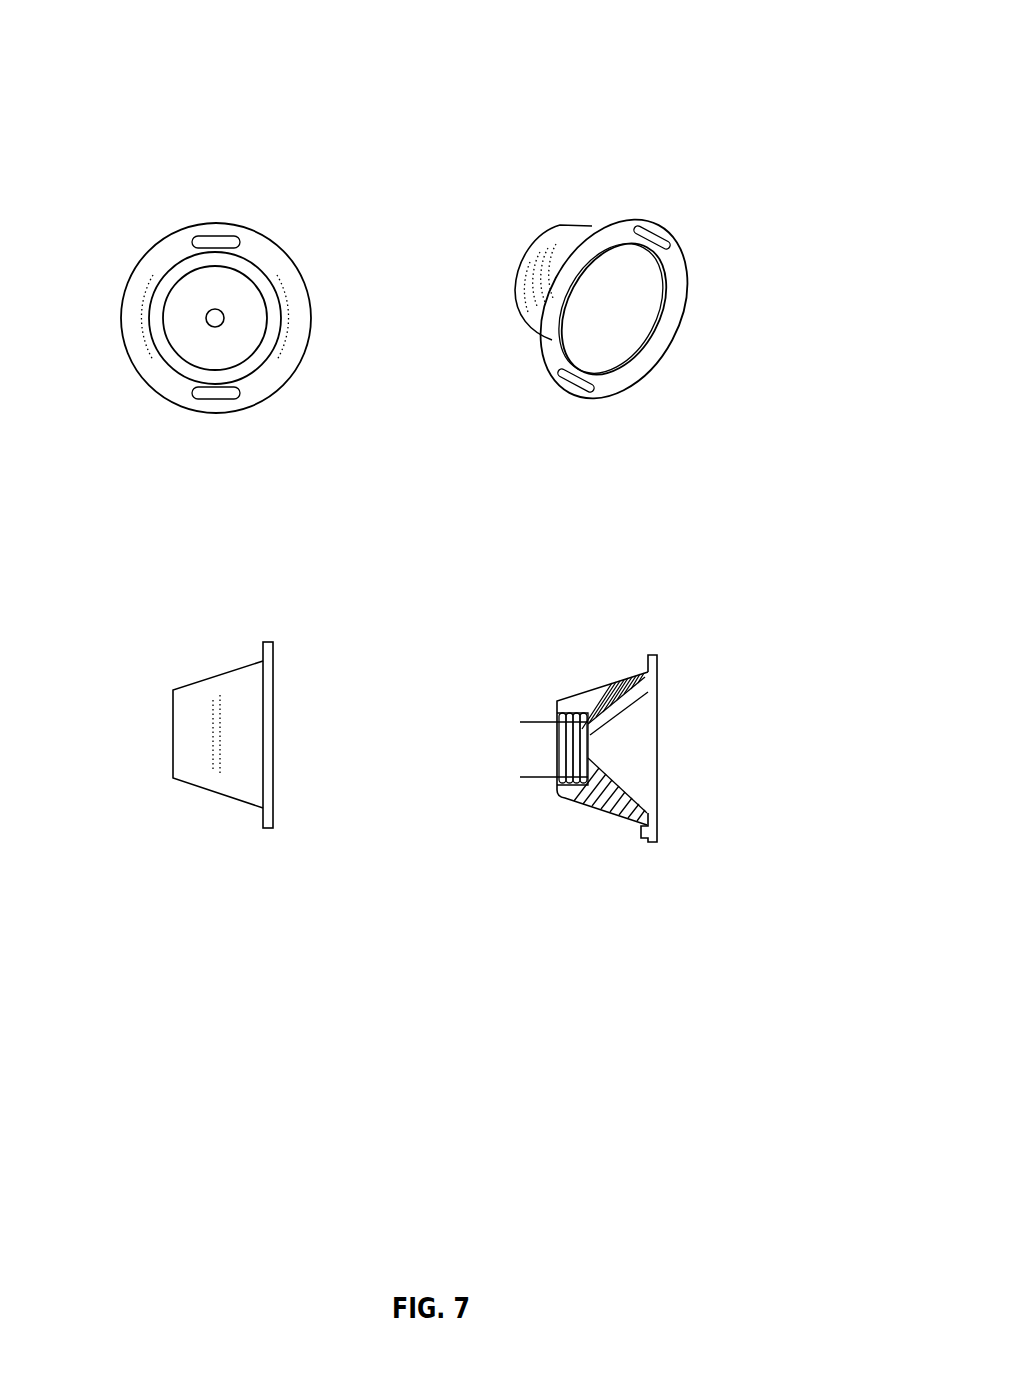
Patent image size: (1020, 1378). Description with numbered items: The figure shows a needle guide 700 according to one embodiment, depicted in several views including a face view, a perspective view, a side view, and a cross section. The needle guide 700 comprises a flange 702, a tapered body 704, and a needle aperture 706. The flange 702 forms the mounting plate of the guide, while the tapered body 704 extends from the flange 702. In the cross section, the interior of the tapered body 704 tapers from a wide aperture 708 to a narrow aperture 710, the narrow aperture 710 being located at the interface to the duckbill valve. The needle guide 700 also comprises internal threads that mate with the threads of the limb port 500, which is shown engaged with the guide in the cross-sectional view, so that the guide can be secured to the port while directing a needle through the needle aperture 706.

The needle guide 700 is at (614, 54).
The flange 702 is at (548, 377).
The tapered body 704 is at (263, 300).
The needle aperture 706 is at (217, 318).
The wide aperture 708 is at (648, 712).
The narrow aperture 710 is at (593, 745).
The limb port 500 is at (538, 743).